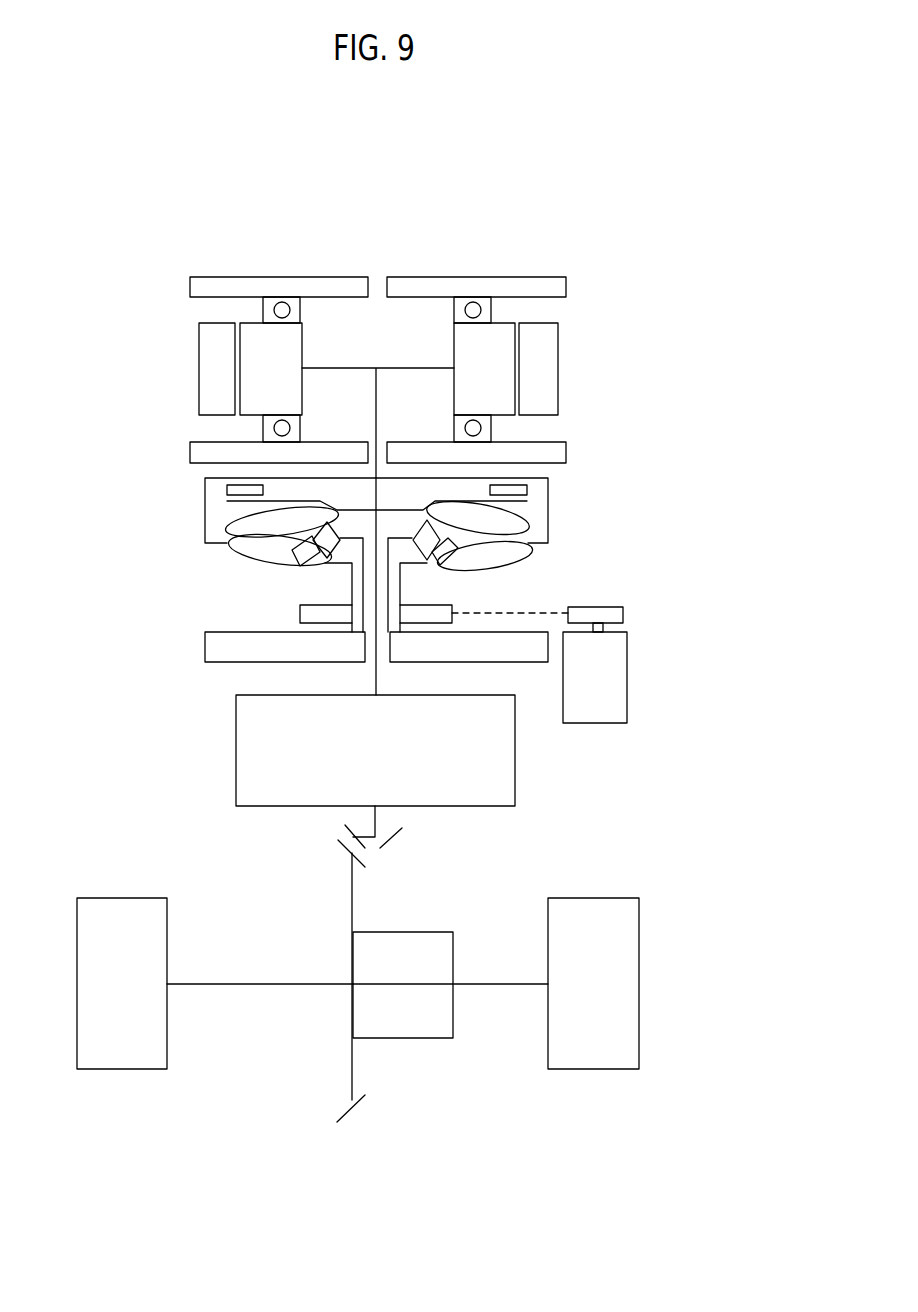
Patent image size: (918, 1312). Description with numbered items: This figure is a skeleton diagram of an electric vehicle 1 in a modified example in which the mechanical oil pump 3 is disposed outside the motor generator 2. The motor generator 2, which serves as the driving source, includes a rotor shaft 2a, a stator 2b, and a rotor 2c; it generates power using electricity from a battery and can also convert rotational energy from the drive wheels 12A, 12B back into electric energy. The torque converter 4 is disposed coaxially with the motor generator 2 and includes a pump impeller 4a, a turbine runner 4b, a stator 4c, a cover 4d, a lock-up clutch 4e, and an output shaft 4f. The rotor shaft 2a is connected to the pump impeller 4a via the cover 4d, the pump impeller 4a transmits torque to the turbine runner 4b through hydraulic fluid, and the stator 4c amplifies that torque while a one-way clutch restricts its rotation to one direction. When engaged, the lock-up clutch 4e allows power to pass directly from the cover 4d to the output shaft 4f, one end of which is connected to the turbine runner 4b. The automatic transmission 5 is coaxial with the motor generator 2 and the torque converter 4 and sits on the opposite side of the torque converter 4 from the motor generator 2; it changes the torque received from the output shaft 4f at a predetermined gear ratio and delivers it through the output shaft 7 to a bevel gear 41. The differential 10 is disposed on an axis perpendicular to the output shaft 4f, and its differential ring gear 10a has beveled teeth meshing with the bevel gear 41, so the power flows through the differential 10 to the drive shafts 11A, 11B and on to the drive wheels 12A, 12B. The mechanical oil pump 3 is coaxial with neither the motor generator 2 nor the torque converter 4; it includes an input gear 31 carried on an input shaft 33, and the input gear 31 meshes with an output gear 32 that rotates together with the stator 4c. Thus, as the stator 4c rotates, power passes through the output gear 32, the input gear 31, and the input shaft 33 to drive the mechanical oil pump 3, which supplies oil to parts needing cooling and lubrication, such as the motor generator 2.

The electric vehicle 1 is at (506, 240).
The motor generator 2 is at (364, 345).
The rotor shaft 2a is at (378, 392).
The stator 2b is at (198, 352).
The rotor 2c is at (256, 318).
The torque converter 4 is at (374, 569).
The pump impeller 4a is at (237, 558).
The turbine runner 4b is at (228, 525).
The stator 4c is at (290, 560).
The cover 4d is at (548, 532).
The lock-up clutch 4e is at (207, 490).
The output shaft 4f is at (373, 673).
The mechanical oil pump 3 is at (627, 683).
The input gear 31 is at (623, 612).
The output gear 32 is at (444, 603).
The input shaft 33 is at (623, 625).
The automatic transmission 5 is at (515, 753).
The output shaft 7 is at (375, 827).
The bevel gear 41 is at (345, 835).
The differential 10 is at (422, 1040).
The differential ring gear 10a is at (345, 852).
The drive shaft 11A is at (497, 986).
The drive shaft 11B is at (252, 986).
The drive wheel 12A is at (598, 1070).
The drive wheel 12B is at (128, 1070).